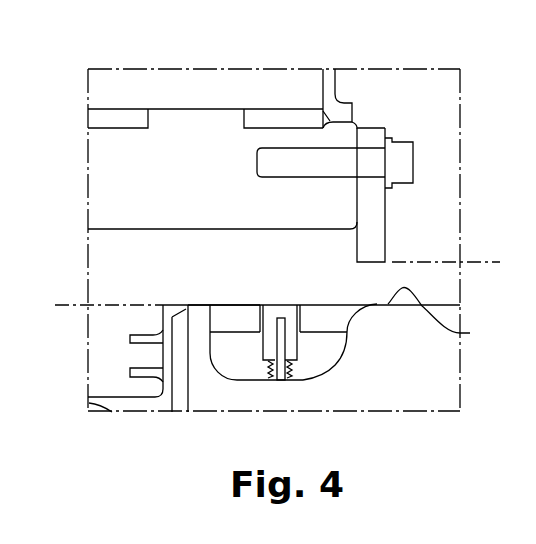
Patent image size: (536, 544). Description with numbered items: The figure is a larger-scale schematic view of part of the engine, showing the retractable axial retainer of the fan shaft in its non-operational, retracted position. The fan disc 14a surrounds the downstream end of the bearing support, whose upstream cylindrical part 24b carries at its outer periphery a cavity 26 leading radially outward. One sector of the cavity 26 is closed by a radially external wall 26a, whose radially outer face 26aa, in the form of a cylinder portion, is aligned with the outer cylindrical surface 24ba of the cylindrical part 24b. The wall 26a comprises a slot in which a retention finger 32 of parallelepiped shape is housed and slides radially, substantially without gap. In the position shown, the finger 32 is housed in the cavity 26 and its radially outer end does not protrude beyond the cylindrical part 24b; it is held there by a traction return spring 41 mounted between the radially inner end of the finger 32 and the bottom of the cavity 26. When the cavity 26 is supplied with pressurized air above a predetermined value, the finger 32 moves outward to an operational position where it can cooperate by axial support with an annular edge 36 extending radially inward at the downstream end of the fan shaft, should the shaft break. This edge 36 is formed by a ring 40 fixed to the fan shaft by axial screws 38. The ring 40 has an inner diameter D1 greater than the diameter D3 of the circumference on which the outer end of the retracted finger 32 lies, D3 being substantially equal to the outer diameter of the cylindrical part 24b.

The fan disc 14a is at (123, 174).
The ring 40 is at (387, 125).
The axial screws 38 is at (402, 153).
The annular edge 36 is at (373, 242).
The inner diameter of the ring D1 is at (474, 262).
The outer diameter of the finger circumference in the non-operational position D3 is at (73, 305).
The upstream cylindrical part 24b is at (423, 362).
The outer cylindrical surface 24ba is at (453, 315).
The cavity 26 is at (233, 353).
The radially outer face 26aa is at (233, 305).
The retention finger 32 is at (292, 305).
The return spring 41 is at (291, 365).
The radially external wall 26a is at (332, 320).